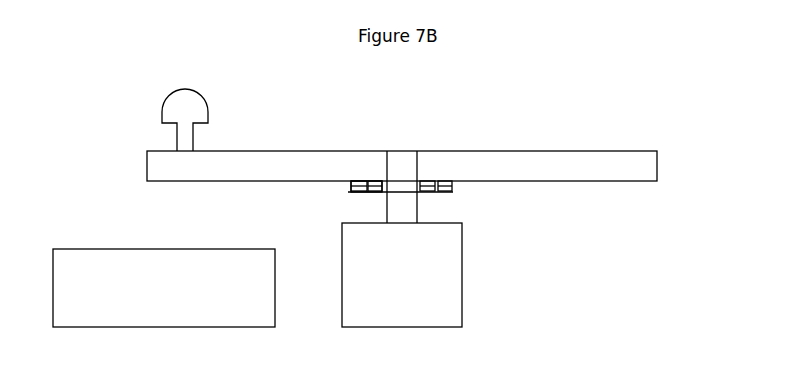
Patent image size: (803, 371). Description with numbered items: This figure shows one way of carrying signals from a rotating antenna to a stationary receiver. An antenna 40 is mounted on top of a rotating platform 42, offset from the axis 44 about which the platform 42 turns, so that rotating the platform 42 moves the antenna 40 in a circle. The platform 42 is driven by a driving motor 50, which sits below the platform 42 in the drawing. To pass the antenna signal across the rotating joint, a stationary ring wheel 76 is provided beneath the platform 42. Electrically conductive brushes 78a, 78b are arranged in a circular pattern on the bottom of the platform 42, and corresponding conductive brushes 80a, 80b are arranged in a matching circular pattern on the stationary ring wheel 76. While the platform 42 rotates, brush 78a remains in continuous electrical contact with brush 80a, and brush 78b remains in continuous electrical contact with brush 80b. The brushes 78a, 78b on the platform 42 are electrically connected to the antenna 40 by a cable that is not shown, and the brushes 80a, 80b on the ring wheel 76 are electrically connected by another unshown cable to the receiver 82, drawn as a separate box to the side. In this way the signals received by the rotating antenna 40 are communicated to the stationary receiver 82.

The antenna 40 is at (183, 107).
The rotating platform 42 is at (662, 160).
The axis 44 is at (407, 151).
The driving motor 50 is at (447, 297).
The ring wheel 76 is at (352, 191).
The electrically conductive brush 78a is at (358, 182).
The electrically conductive brush 78b is at (373, 182).
The conductive brush 80a is at (453, 186).
The conductive brush 80b is at (440, 189).
The receiver 82 is at (95, 278).